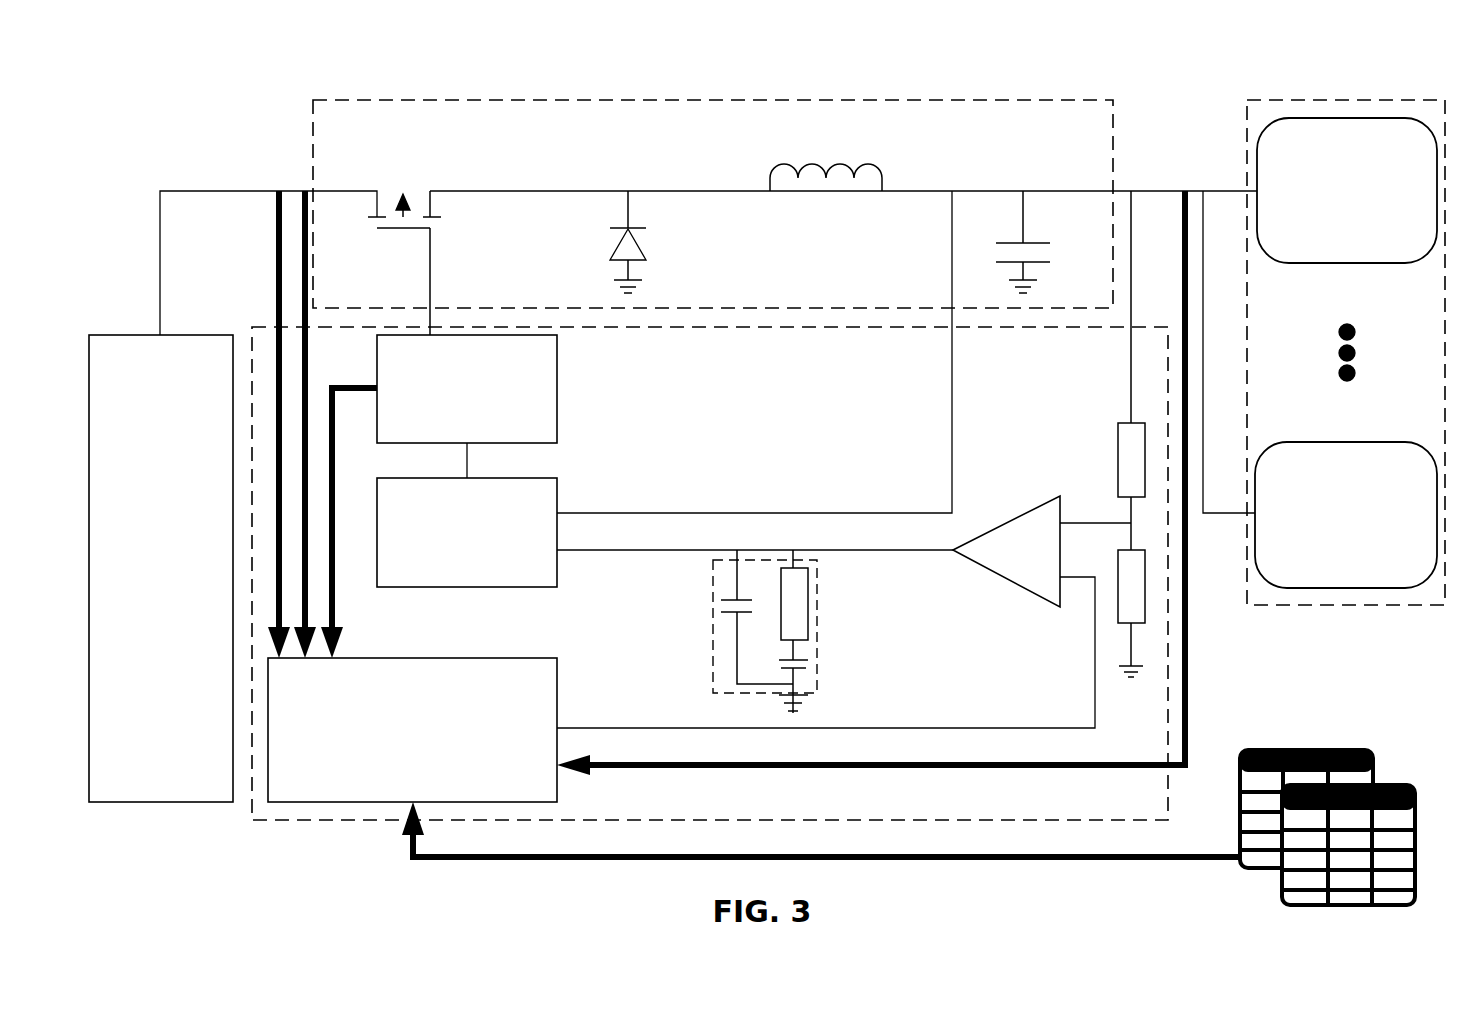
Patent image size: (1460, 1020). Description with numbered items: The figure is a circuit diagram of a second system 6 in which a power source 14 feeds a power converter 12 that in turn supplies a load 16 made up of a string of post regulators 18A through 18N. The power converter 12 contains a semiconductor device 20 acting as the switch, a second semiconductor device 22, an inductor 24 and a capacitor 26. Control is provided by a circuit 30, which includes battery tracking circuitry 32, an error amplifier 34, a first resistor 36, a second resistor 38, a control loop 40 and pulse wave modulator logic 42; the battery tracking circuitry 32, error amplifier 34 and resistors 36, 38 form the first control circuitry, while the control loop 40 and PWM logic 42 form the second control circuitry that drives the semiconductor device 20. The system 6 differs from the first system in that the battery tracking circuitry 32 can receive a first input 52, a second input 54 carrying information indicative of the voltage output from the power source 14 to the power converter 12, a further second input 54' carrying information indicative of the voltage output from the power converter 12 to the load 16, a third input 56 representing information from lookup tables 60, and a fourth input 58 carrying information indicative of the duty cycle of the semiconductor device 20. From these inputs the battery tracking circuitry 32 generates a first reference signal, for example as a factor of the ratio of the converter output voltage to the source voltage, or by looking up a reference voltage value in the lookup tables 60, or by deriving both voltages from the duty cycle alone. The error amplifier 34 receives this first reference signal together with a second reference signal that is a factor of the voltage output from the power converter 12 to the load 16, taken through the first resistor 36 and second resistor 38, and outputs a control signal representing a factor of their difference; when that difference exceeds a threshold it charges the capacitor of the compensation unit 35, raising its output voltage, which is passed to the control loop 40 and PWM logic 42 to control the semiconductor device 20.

The second system 6 is at (1305, 50).
The power converter 12 is at (633, 100).
The power source 14 is at (161, 568).
The load 16 is at (1390, 100).
The post regulator 18A is at (1347, 190).
The post regulator 18N is at (1346, 515).
The semiconductor device 20 is at (395, 230).
The semiconductor device 22 is at (640, 248).
The inductor 24 is at (866, 166).
The capacitor 26 is at (1038, 243).
The circuit 30 is at (1097, 327).
The battery tracking circuitry 32 is at (412, 730).
The error amplifier 34 is at (1025, 512).
The compensation unit 35 is at (817, 650).
The first resistor 36 is at (1128, 423).
The second resistor 38 is at (1128, 550).
The control loop 40 is at (467, 532).
The pulse wave modulator (PWM) logic 42 is at (467, 389).
The first input 52 is at (276, 285).
The second input 54 is at (320, 424).
The second input 54' is at (892, 483).
The third input 56 is at (1028, 857).
The fourth input 58 is at (337, 492).
The lookup tables 60 is at (1312, 750).